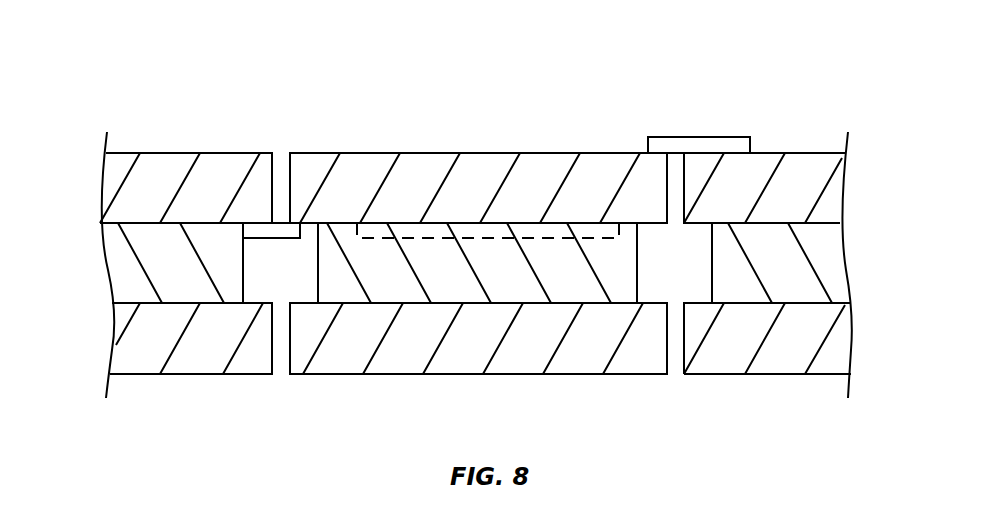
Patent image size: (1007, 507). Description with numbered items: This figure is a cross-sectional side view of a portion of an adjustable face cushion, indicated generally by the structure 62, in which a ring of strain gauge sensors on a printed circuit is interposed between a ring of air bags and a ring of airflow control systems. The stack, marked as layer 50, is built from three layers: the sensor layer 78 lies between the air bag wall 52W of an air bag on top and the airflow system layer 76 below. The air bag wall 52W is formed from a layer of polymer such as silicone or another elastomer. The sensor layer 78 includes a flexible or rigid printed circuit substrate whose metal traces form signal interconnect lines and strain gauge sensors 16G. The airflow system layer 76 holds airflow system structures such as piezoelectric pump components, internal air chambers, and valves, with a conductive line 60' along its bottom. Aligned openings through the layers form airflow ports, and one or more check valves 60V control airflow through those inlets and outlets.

The semiconductor package / device structure 62 is at (808, 57).
The check valve 60V is at (298, 236).
The strain gauge sensor 16G is at (488, 243).
The air bag wall 52W is at (875, 154).
The sensor layer 78 is at (875, 226).
The airflow system layer 76 is at (875, 303).
The conductive line 60' is at (359, 403).
The layer 50 is at (78, 218).